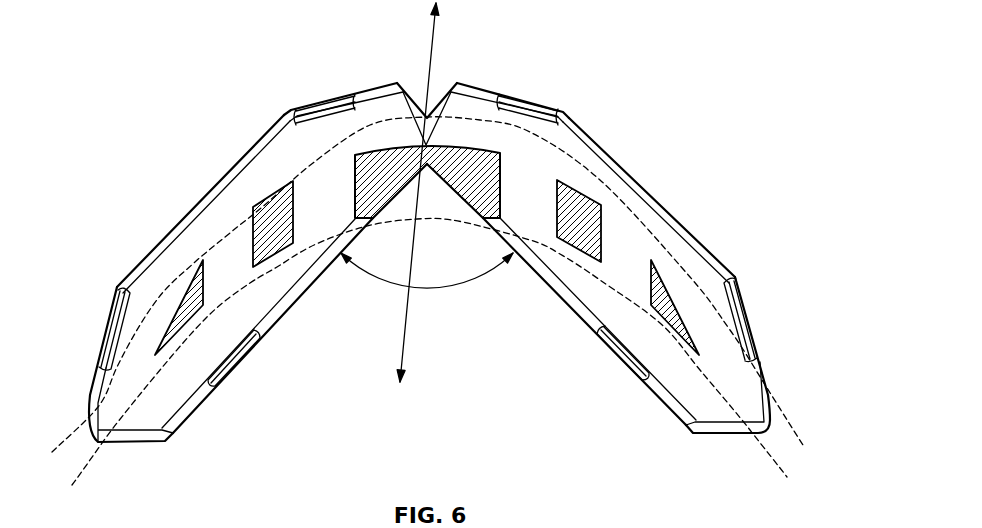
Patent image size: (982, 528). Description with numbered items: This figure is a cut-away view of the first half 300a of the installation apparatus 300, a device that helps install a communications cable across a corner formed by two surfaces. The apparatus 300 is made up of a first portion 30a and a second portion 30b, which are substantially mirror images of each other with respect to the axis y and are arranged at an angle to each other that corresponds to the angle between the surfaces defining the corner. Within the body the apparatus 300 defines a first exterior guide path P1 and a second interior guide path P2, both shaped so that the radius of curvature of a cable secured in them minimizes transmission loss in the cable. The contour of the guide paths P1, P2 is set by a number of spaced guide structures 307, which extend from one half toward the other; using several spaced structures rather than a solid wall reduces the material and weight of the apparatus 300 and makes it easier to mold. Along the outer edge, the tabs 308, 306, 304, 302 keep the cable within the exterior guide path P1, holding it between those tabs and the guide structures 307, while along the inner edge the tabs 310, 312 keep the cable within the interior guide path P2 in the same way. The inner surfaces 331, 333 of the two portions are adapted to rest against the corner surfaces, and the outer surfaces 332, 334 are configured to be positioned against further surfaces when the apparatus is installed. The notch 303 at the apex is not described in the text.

The installation apparatus 300 is at (660, 172).
The first half 300a is at (607, 140).
The notch 303 is at (440, 72).
The outer surface 332 is at (227, 172).
The outer surface 334 is at (730, 277).
The first portion 30a is at (167, 200).
The second portion 30b is at (683, 215).
The guide structure 307 is at (665, 268).
The inner surface 331 is at (296, 302).
The inner surface 333 is at (563, 300).
The tab 306 is at (327, 100).
The tab 304 is at (523, 103).
The tab 308 is at (104, 330).
The tab 302 is at (750, 317).
The tab 310 is at (230, 365).
The tab 312 is at (635, 363).
The first exterior guide path P1 is at (797, 427).
The second interior guide path P2 is at (768, 455).
The axis y is at (437, 30).